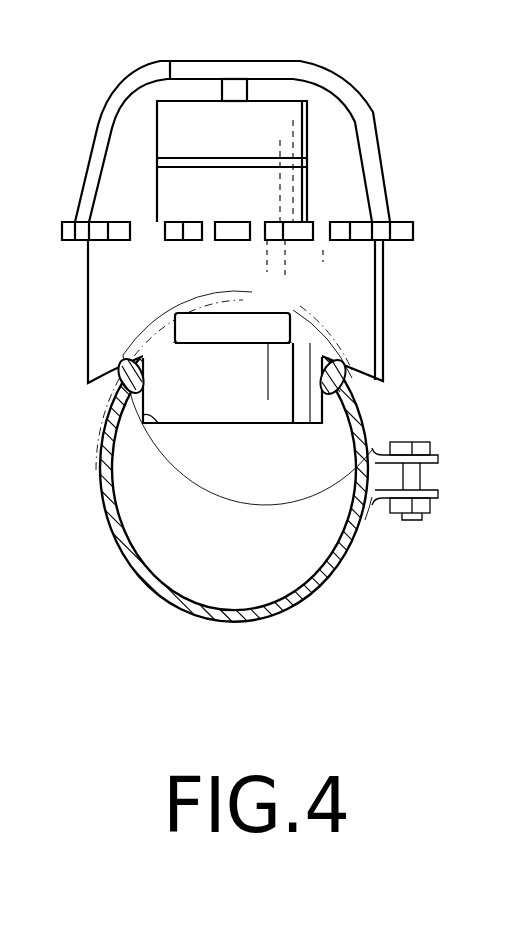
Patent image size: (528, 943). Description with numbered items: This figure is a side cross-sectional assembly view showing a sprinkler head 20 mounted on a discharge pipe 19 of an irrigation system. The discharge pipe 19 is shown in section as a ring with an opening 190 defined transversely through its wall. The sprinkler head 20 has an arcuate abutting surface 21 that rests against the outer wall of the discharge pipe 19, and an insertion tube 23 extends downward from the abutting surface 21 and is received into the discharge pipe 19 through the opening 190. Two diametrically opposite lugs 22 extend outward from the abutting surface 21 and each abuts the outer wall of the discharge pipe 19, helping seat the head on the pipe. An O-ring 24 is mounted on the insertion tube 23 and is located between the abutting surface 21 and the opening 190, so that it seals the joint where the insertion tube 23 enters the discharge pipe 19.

The discharge pipe 19 is at (352, 543).
The sprinkler head 20 is at (378, 115).
The arcuate abutting surface 21 is at (222, 346).
The lugs 22 is at (270, 320).
The insertion tube 23 is at (283, 424).
The O-ring 24 is at (350, 400).
The opening 190 is at (156, 421).